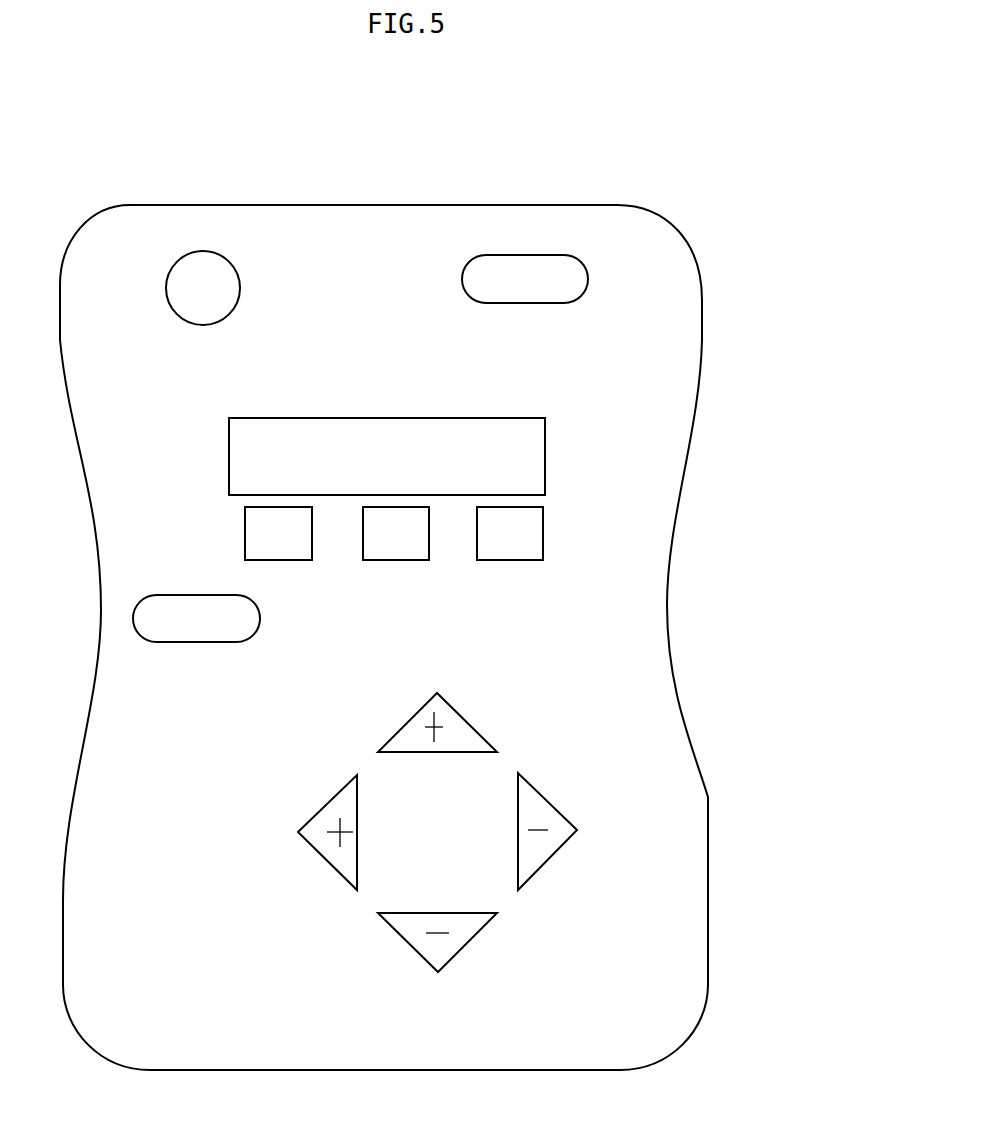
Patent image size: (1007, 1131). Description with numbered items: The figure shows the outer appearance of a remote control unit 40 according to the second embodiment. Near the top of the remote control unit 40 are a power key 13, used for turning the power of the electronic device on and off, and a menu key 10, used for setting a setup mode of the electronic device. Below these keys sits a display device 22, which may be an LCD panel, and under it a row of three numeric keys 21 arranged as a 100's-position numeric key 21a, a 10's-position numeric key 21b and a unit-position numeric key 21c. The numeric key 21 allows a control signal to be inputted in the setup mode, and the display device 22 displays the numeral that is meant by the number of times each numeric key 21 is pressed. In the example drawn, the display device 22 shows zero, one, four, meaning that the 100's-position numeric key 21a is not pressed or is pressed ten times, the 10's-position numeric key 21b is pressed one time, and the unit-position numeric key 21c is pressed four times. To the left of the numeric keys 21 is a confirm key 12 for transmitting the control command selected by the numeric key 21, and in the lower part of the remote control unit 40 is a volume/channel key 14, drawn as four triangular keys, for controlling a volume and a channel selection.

The remote control unit 40 is at (690, 95).
The power key 13 is at (204, 251).
The menu key 10 is at (527, 240).
The confirm key 12 is at (130, 619).
The display device 22 is at (545, 455).
The numeric key 21 is at (535, 589).
The 100's-position numeric key 21a is at (278, 560).
The 10's-position numeric key 21b is at (397, 560).
The unit-position numeric key 21c is at (545, 530).
The volume/channel key 14 is at (563, 745).